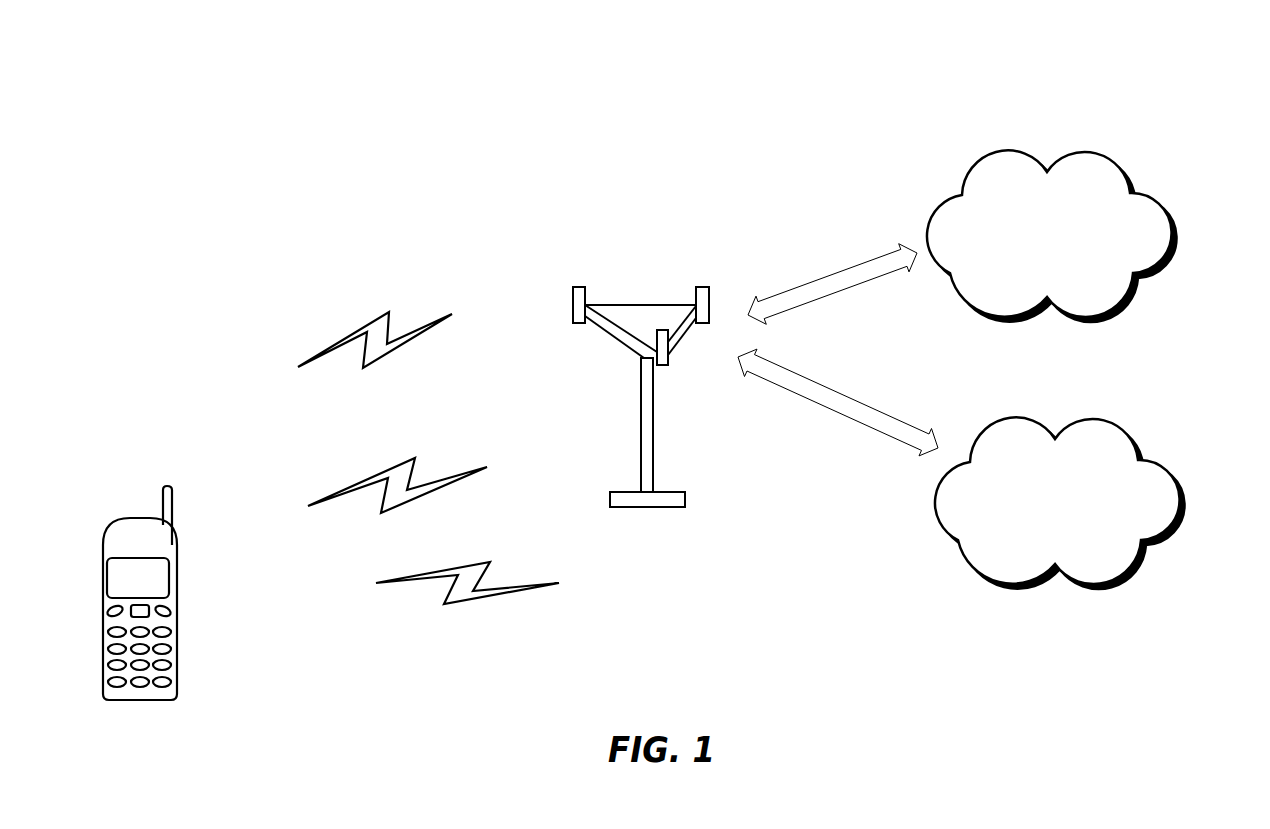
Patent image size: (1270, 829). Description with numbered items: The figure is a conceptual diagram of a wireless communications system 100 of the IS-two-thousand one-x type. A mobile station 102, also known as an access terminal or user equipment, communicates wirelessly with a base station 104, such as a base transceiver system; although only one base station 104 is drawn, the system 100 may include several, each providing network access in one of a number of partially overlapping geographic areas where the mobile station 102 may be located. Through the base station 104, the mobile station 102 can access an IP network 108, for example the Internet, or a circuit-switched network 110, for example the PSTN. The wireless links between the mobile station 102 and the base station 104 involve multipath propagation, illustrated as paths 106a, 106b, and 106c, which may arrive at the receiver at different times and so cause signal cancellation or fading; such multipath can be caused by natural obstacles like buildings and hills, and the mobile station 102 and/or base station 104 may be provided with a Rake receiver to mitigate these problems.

The IS-2000 1x communications system 100 is at (679, 368).
The mobile station 102 is at (168, 486).
The base station 104 is at (701, 289).
The path 106a is at (453, 311).
The path 106b is at (417, 456).
The path 106c is at (520, 583).
The IP network 108 is at (1108, 172).
The circuit-switched network 110 is at (1108, 427).